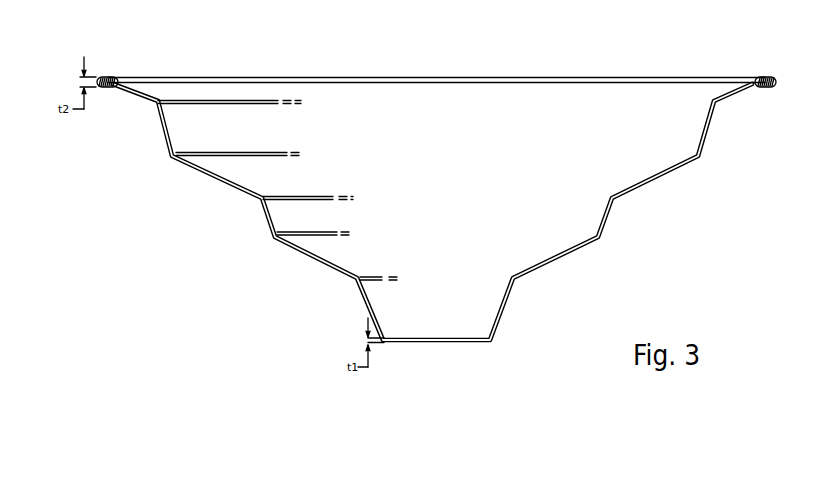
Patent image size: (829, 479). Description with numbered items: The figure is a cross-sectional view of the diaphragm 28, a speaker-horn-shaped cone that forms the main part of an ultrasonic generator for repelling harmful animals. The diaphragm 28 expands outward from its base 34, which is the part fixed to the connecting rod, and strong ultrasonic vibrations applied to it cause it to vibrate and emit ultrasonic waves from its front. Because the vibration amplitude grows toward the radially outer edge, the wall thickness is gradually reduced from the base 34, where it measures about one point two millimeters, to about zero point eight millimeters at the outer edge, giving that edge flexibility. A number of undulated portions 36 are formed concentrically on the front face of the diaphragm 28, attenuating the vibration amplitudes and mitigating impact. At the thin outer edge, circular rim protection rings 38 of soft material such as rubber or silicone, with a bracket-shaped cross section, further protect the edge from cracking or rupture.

The diaphragm 28 is at (427, 105).
The base 34 is at (405, 345).
The undulated portions 36 is at (265, 197).
The rim protection rings 38 is at (107, 76).